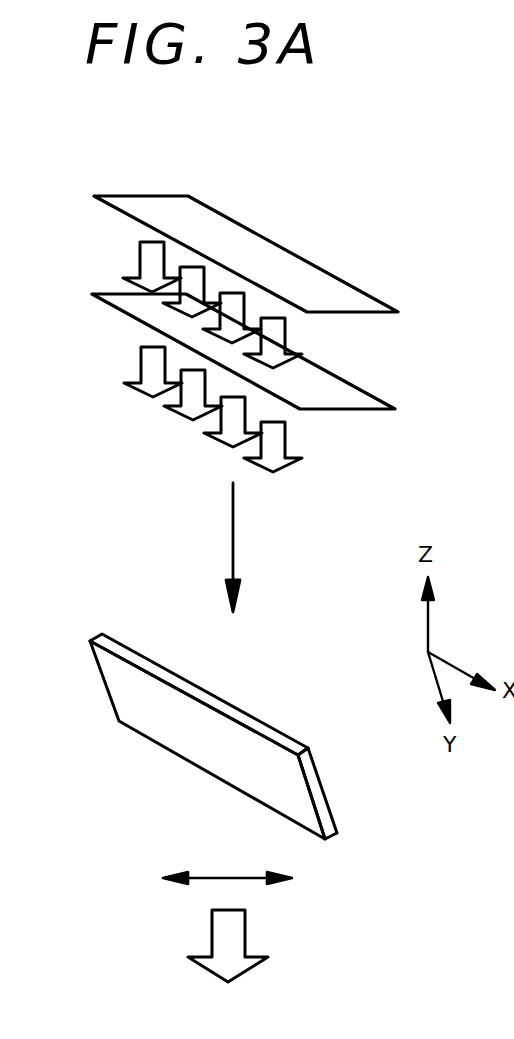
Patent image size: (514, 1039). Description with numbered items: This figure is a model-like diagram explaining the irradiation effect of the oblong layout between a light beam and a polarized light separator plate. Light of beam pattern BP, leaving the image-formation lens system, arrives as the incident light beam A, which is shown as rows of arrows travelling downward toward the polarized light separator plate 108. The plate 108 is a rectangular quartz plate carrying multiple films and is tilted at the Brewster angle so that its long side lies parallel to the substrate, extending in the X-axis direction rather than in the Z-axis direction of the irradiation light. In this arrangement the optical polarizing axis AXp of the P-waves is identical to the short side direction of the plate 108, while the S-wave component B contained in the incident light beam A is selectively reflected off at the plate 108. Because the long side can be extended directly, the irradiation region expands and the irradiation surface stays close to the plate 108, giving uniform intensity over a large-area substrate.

The beam pattern BP is at (293, 252).
The incident light beam A is at (140, 367).
The polarized light separator plate 108 is at (136, 722).
The S-wave component B is at (212, 940).
The optical polarizing axis of P-waves AXp is at (255, 880).